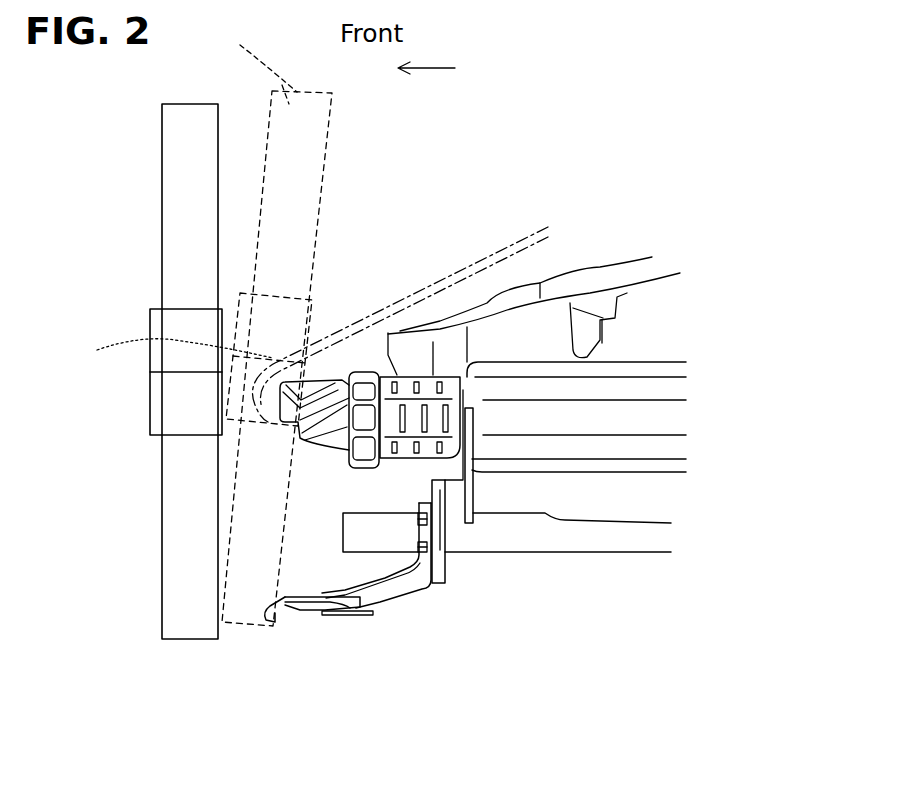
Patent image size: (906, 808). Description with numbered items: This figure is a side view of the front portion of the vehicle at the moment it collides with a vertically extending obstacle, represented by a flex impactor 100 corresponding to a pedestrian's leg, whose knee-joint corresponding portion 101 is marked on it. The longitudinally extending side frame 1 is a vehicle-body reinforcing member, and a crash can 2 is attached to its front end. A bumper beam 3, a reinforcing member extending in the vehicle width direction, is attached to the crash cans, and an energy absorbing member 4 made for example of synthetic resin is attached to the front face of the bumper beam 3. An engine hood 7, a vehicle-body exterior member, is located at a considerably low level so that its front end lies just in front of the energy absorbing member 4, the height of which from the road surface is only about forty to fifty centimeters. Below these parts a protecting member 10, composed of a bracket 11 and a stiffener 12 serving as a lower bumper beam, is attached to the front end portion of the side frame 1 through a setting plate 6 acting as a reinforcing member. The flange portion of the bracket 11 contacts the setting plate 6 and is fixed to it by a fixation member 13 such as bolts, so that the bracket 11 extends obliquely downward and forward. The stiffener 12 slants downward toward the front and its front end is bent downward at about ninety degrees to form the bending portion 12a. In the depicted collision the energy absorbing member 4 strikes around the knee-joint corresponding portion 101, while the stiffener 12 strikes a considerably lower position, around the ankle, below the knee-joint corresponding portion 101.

The side frame 1 is at (578, 422).
The crash can 2 is at (422, 388).
The bumper beam 3 is at (356, 372).
The energy absorbing member 4 is at (322, 385).
The setting plate 6 is at (455, 500).
The engine hood 7 is at (512, 242).
The protecting member 10 is at (358, 670).
The bracket 11 is at (390, 587).
The stiffener 12 is at (325, 604).
The bending portion 12a is at (268, 625).
The fixation member 13 is at (418, 545).
The flex impactor 100 is at (196, 118).
The knee-joint corresponding portion 101 is at (142, 372).